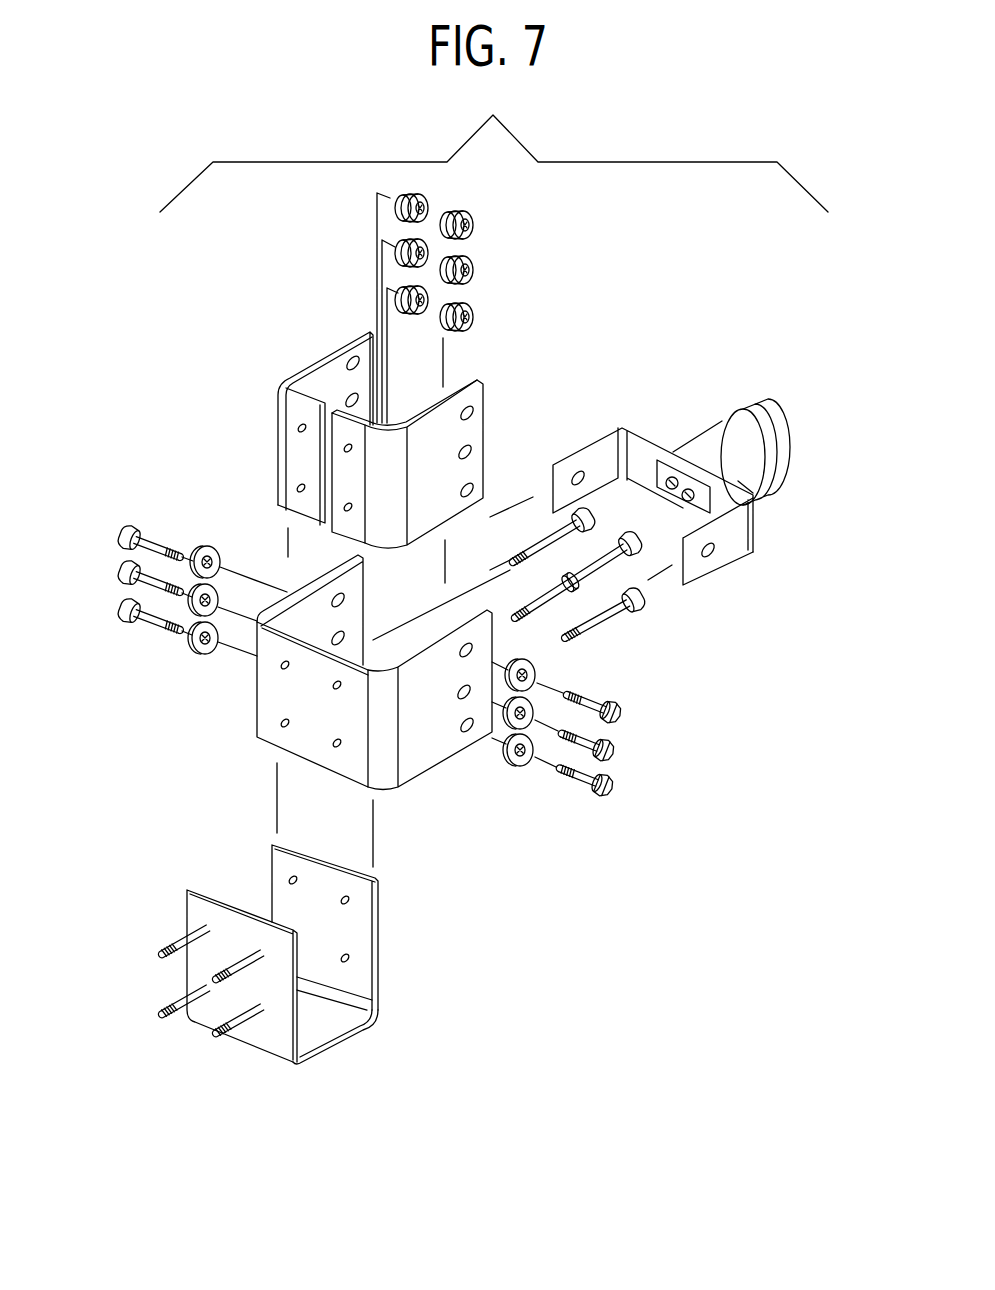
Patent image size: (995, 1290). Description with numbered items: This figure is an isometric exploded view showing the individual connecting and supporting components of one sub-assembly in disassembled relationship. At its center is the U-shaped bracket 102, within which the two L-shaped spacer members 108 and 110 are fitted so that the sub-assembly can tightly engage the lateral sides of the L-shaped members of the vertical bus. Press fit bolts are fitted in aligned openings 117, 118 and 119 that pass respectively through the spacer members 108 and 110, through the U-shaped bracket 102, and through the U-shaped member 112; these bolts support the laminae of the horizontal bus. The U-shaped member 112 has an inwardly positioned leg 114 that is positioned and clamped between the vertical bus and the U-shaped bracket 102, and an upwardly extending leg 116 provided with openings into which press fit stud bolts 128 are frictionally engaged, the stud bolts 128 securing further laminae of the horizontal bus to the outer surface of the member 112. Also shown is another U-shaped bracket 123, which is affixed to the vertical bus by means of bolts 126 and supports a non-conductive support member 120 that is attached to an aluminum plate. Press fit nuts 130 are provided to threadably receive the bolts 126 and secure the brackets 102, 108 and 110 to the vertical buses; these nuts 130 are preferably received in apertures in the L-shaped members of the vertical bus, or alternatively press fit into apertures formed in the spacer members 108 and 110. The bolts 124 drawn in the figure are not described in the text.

The U-shaped bracket 102 is at (428, 753).
The spacer member 108 is at (315, 377).
The spacer member 110 is at (455, 438).
The U-shaped member 112 is at (261, 955).
The inwardly positioned leg 114 is at (306, 888).
The upwardly extending leg 116 is at (195, 920).
The openings 117 is at (300, 489).
The openings 118 is at (283, 722).
The openings 119 is at (343, 900).
The non-conductive support member 120 is at (718, 442).
The U-shaped bracket 123 is at (730, 545).
The bolts 124 is at (605, 622).
The bolts 126 is at (607, 787).
The press fit stud bolts 128 is at (217, 1047).
The press fit nuts 130 is at (473, 312).